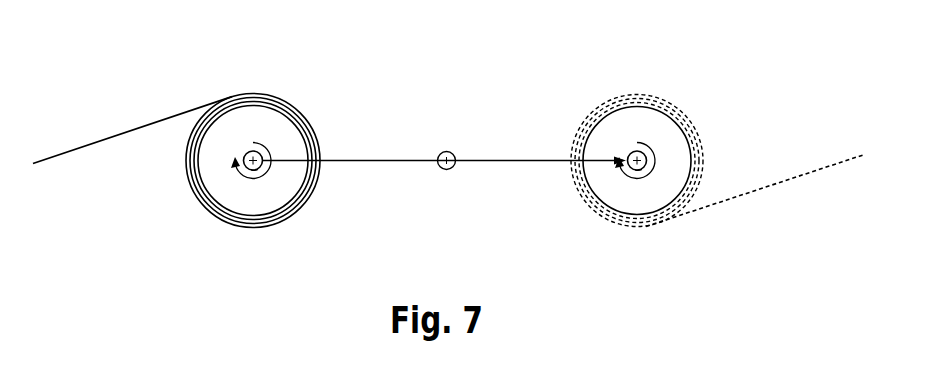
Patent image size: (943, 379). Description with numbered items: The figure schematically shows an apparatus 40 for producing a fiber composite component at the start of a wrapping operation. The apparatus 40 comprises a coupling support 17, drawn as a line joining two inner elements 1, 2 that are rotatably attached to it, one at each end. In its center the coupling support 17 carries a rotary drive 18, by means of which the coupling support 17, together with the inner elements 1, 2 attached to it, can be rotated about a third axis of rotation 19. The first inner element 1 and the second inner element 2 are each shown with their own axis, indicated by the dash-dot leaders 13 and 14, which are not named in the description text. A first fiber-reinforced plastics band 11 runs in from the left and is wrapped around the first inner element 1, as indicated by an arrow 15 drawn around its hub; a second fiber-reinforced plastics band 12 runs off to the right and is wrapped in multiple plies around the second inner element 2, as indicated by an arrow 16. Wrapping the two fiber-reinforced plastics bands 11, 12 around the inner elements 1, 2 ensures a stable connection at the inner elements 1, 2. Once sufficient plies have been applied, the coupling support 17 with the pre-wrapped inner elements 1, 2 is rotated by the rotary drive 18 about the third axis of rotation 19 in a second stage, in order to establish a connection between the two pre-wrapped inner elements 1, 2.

The first inner element 1 is at (284, 141).
The second inner element 2 is at (606, 141).
The first fiber-reinforced plastics band 11 is at (110, 132).
The second fiber-reinforced plastics band 12 is at (807, 175).
The first roller axis 13 is at (250, 150).
The second roller axis 14 is at (632, 151).
The arrow 15 is at (255, 178).
The arrow 16 is at (637, 178).
The coupling support 17 is at (382, 166).
The rotary drive 18 is at (447, 170).
The third axis of rotation 19 is at (448, 152).
The apparatus 40 is at (702, 81).